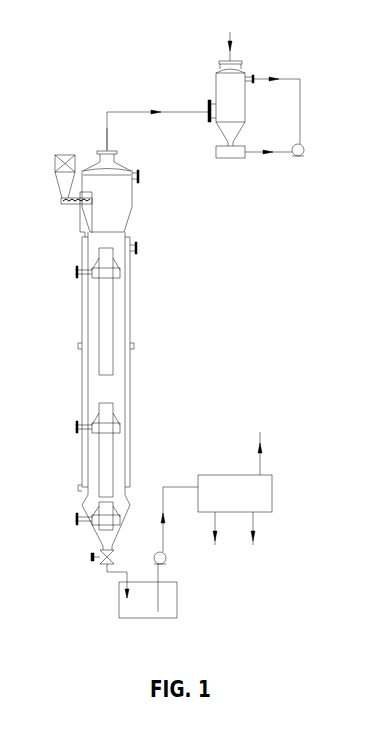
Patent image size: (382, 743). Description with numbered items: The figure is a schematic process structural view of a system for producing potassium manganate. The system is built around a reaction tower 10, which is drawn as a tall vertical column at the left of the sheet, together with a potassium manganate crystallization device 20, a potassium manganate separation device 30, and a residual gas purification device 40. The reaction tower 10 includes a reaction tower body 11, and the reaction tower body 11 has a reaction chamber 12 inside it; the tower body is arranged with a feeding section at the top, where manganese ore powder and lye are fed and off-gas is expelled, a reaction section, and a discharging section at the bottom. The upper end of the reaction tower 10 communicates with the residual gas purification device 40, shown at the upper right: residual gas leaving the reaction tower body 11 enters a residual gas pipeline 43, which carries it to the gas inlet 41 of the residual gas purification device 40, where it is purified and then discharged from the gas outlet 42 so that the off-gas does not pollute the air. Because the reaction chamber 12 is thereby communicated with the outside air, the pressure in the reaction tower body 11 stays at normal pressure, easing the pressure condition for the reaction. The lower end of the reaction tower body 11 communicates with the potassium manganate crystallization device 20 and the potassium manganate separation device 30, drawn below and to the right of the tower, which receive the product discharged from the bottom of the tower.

The reaction tower 10 is at (160, 348).
The reaction tower body 11 is at (128, 423).
The reaction chamber 12 is at (116, 305).
The potassium manganate crystallization device 20 is at (163, 600).
The potassium manganate separation device 30 is at (240, 493).
The residual gas purification device 40 is at (232, 103).
The gas inlet 41 is at (210, 115).
The gas outlet 42 is at (233, 60).
The residual gas pipeline 43 is at (152, 112).